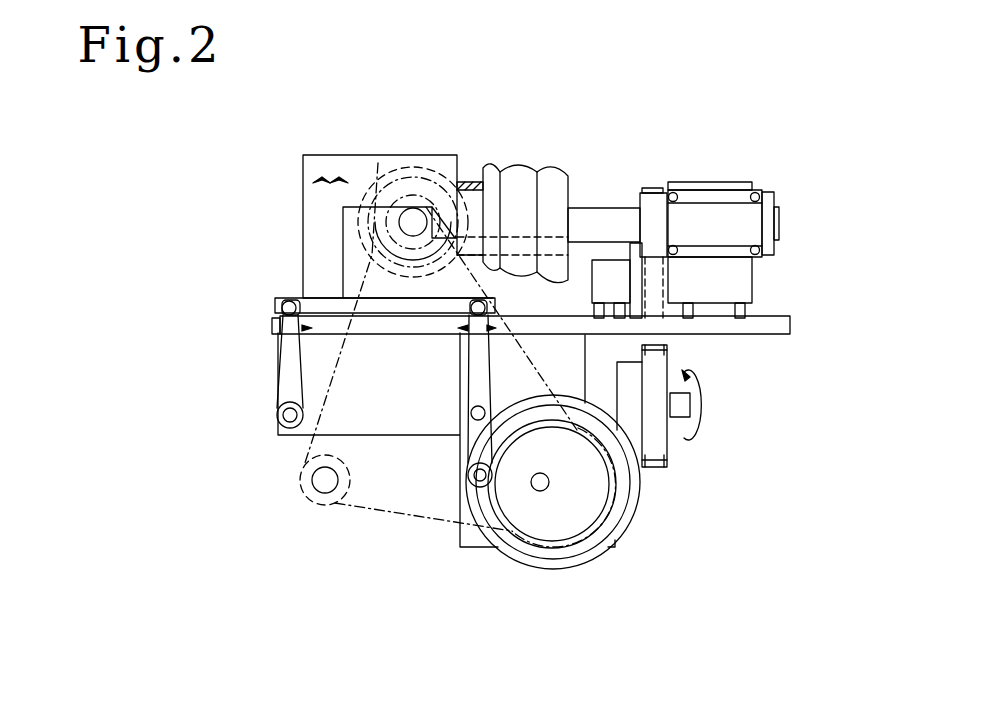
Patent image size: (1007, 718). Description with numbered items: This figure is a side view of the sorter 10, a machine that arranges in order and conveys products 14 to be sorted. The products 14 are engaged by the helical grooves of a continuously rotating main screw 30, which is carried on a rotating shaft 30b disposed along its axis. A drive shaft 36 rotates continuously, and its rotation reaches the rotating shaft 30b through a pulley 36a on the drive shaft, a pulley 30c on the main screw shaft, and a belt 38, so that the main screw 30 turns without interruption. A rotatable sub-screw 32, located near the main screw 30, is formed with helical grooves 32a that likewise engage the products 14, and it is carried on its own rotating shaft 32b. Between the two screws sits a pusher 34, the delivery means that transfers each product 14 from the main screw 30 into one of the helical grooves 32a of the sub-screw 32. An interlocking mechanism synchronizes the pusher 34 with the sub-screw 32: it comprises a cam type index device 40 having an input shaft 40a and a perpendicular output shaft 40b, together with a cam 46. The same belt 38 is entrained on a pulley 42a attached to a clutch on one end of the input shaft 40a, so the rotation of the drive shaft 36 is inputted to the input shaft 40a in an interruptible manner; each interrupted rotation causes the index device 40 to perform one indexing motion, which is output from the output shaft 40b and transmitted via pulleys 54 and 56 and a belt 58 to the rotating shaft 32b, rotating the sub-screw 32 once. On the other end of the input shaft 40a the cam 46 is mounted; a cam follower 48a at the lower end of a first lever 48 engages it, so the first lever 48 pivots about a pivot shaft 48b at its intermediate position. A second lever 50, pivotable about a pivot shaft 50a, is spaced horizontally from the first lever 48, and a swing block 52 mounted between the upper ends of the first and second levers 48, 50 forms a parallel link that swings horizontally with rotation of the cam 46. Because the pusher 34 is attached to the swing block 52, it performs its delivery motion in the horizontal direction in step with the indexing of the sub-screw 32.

The sheet feeding apparatus 10 is at (702, 118).
The product 14 is at (472, 181).
The main screw 30 is at (406, 160).
The rotating shaft 30b is at (412, 226).
The pulley 30c is at (378, 163).
The sub-screw 32 is at (540, 155).
The helical groove 32a is at (498, 167).
The rotating shaft 32b is at (600, 208).
The pusher 34 is at (440, 157).
The drive shaft 36 is at (317, 503).
The pulley 36a is at (298, 492).
The belt 38 is at (377, 518).
The cam type index device 40 is at (515, 570).
The input shaft 40a is at (542, 491).
The output shaft 40b is at (703, 406).
The pulley 42a is at (632, 492).
The cam 46 is at (608, 519).
The first lever 48 is at (477, 375).
The cam follower 48a is at (474, 486).
The pivot shaft 48b is at (473, 447).
The second lever 50 is at (288, 370).
The pivot shaft 50a is at (277, 421).
The swing block 52 is at (387, 306).
The pulley 54 is at (668, 447).
The pulley 56 is at (651, 191).
The belt 58 is at (663, 285).